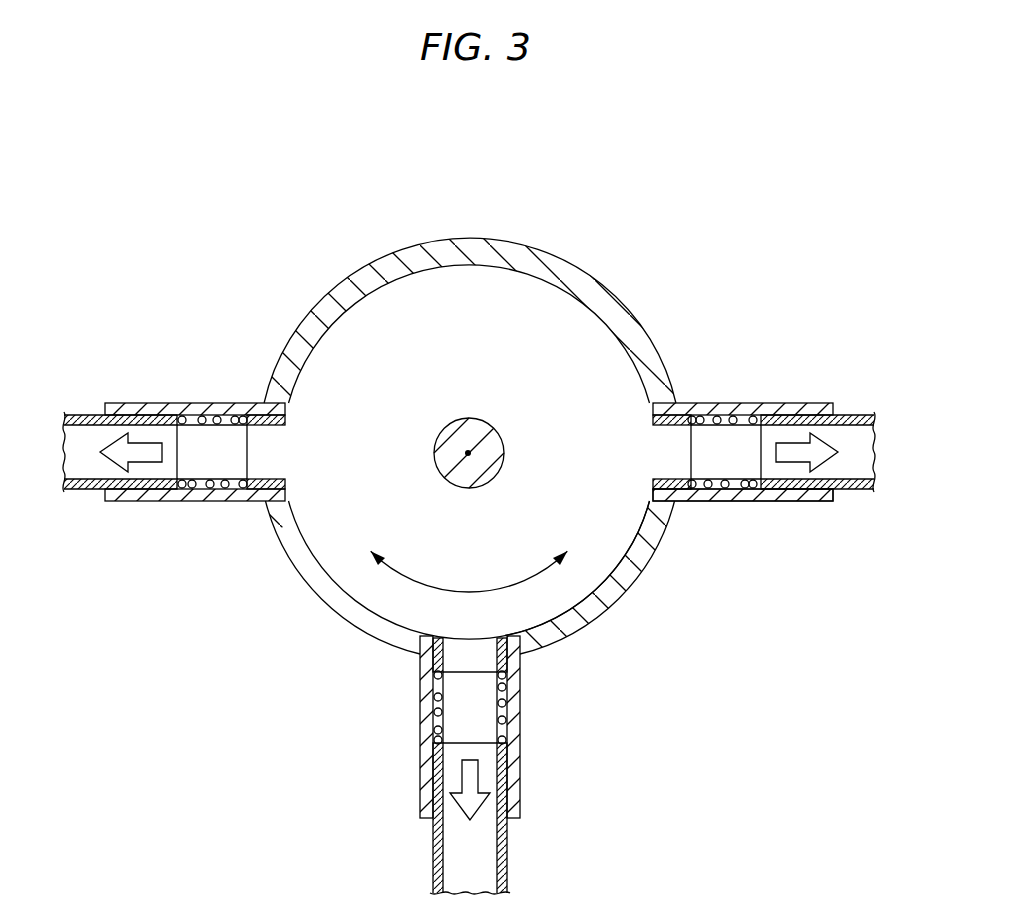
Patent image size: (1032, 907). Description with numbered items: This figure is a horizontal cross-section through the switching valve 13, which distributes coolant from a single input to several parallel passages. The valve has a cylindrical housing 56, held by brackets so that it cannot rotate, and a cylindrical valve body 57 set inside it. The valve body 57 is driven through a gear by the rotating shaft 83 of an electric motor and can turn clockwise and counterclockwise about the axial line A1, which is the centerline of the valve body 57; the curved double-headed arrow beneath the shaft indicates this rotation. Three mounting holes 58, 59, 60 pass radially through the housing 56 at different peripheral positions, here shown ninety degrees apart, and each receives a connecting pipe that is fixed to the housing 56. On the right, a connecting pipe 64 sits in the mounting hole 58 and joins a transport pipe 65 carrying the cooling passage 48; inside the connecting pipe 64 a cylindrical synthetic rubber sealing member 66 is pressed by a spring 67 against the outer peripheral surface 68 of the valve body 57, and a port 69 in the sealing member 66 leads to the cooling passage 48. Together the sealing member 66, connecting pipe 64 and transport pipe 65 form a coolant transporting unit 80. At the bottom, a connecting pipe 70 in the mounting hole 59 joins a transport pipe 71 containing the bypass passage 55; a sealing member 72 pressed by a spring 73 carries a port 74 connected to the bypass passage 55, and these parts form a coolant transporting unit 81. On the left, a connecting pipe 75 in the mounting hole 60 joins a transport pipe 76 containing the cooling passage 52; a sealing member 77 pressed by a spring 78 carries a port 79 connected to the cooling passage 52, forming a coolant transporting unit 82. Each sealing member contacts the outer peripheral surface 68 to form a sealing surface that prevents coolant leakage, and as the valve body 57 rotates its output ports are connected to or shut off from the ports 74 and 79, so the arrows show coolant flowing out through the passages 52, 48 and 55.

The switching valve 13 is at (631, 176).
The axial line A1 is at (468, 453).
The rotating shaft 83 is at (480, 430).
The valve body 57 is at (527, 290).
The housing 56 is at (582, 278).
The coolant transporting unit 82 is at (132, 336).
The coolant transporting unit 80 is at (805, 336).
The coolant transporting unit 81 is at (556, 787).
The cooling passage 52 is at (84, 425).
The cooling passage 48 is at (852, 425).
The transport pipe 76 is at (104, 494).
The connecting pipe 75 is at (178, 503).
The spring 78 is at (224, 490).
The sealing member 77 is at (249, 417).
The port 79 is at (252, 455).
The mounting hole 60 is at (268, 520).
The sealing member 66 is at (672, 417).
The port 69 is at (683, 455).
The spring 67 is at (724, 490).
The connecting pipe 64 is at (795, 503).
The transport pipe 65 is at (843, 494).
The mounting hole 58 is at (684, 503).
The outer peripheral surface 68 is at (600, 619).
The mounting hole 59 is at (545, 662).
The sealing member 72 is at (433, 668).
The port 74 is at (470, 672).
The spring 73 is at (433, 722).
The connecting pipe 70 is at (518, 755).
The transport pipe 71 is at (508, 838).
The bypass passage 55 is at (488, 876).